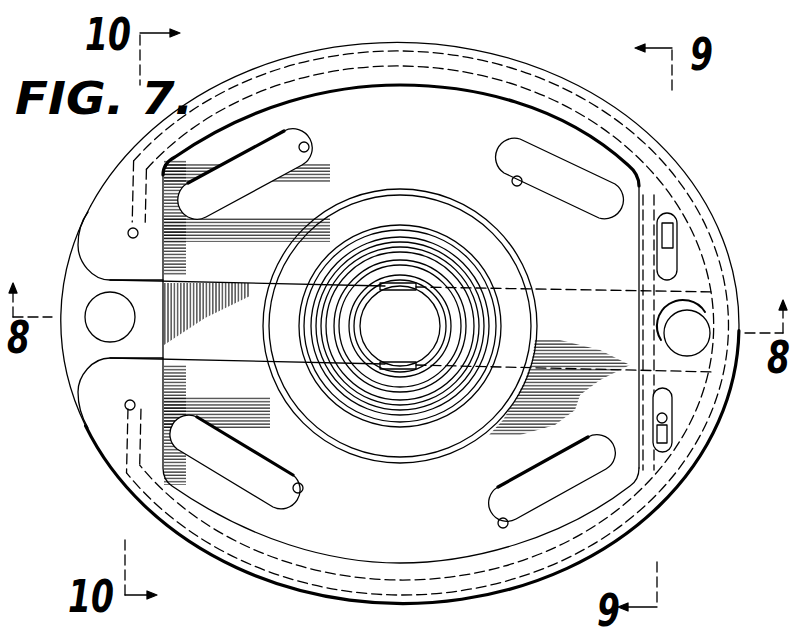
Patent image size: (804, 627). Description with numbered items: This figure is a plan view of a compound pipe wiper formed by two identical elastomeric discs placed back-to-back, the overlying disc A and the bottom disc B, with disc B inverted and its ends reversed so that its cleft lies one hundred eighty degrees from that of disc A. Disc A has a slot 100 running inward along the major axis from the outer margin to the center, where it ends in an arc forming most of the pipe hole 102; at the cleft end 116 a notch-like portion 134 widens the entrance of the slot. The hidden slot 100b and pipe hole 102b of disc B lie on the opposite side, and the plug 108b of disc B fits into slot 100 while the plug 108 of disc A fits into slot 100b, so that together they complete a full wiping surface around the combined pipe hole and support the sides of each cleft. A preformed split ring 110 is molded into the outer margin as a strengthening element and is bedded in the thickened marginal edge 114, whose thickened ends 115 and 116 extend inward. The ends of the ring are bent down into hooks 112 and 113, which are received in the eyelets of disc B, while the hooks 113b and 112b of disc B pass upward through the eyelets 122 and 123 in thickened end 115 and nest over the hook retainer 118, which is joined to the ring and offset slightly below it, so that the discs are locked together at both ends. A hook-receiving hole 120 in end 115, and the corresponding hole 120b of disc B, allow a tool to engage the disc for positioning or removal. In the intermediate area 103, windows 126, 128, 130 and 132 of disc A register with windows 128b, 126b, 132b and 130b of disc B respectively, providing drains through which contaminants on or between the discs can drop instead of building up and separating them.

The disc A is at (502, 49).
The disc B is at (58, 267).
The slot 100 is at (183, 357).
The slot 100b is at (558, 290).
The pipe hole 102 is at (432, 340).
The pipe hole 102b is at (362, 318).
The intermediate area 103 is at (400, 365).
The plug 108 is at (498, 286).
The plug 108b is at (271, 342).
The split ring 110 is at (307, 62).
The hook 112 is at (122, 418).
The hook 112b is at (669, 445).
The hook 113 is at (127, 228).
The hook 113b is at (669, 226).
The thickened marginal edge 114 is at (413, 47).
The thickened end portion 115 is at (638, 438).
The cleft end 116 is at (153, 267).
The hook retainer 118 is at (641, 323).
The hook-receiving hole 120 is at (707, 323).
The hook-receiving hole 120b is at (96, 323).
The eyelet 122 is at (671, 260).
The eyelet 123 is at (671, 397).
The window 126 is at (296, 138).
The window 126b is at (512, 181).
The window 128 is at (507, 155).
The window 128b is at (309, 149).
The window 130 is at (494, 495).
The window 130b is at (300, 501).
The window 132 is at (244, 456).
The window 132b is at (498, 524).
The notch-like portion 134 is at (77, 378).